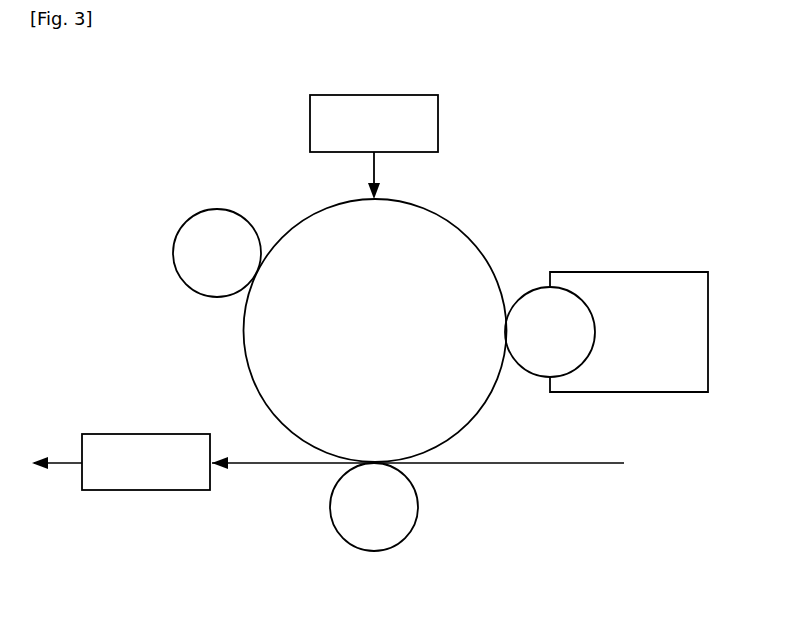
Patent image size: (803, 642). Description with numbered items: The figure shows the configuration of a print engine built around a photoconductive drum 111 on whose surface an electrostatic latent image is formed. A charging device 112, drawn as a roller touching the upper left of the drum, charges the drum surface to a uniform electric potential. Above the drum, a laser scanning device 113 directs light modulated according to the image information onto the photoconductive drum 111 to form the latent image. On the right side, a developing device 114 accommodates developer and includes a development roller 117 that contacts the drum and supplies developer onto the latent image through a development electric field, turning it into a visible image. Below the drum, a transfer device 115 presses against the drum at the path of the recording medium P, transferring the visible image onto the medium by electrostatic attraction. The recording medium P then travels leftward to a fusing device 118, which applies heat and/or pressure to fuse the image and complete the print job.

The photoconductive drum 111 is at (440, 211).
The charging device 112 is at (215, 209).
The laser scanning device 113 is at (371, 95).
The developing device 114 is at (627, 272).
The transfer device 115 is at (419, 505).
The development roller 117 is at (519, 291).
The fusing device 118 is at (144, 434).
The recording medium P is at (254, 468).